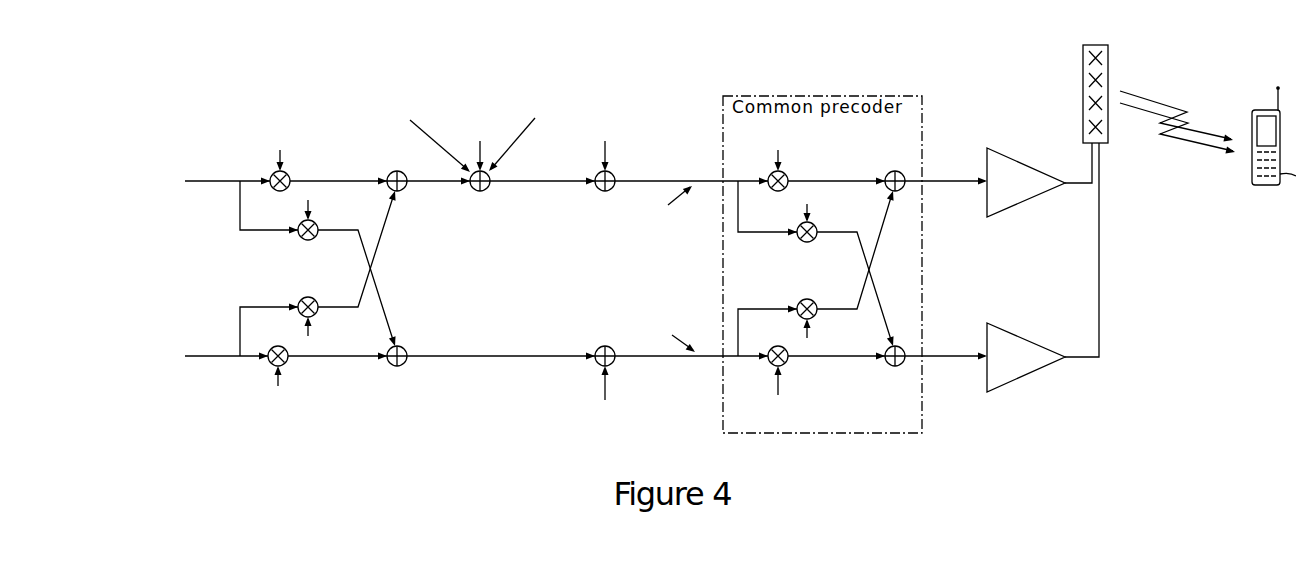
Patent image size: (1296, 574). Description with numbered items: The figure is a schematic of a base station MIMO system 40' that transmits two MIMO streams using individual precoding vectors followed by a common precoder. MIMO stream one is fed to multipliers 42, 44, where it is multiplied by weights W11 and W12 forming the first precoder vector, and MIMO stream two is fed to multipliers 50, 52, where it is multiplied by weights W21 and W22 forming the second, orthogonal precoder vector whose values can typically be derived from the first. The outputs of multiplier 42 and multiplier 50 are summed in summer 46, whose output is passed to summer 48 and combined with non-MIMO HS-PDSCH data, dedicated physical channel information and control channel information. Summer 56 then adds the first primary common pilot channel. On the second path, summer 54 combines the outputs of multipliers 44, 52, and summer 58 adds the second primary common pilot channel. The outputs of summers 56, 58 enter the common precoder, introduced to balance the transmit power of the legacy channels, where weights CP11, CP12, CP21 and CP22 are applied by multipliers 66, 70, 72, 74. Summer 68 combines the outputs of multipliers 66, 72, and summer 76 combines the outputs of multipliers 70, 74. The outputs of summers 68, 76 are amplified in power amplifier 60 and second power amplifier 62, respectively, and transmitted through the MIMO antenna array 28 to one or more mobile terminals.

The base station MIMO system 40' is at (203, 215).
The multiplier 42 is at (275, 189).
The multiplier 44 is at (314, 239).
The summer 46 is at (390, 172).
The summer 48 is at (473, 191).
The multiplier 50 is at (300, 298).
The multiplier 52 is at (272, 345).
The summer 54 is at (390, 365).
The summer 56 is at (598, 191).
The summer 58 is at (598, 346).
The power amplifier 60 is at (1020, 158).
The second power amplifier 62 is at (1030, 374).
The multiplier 66 is at (773, 191).
The summer 68 is at (888, 173).
The multiplier 70 is at (813, 241).
The multiplier 72 is at (800, 300).
The multiplier 74 is at (772, 348).
The summer 76 is at (890, 365).
The antenna array 28 is at (1084, 43).